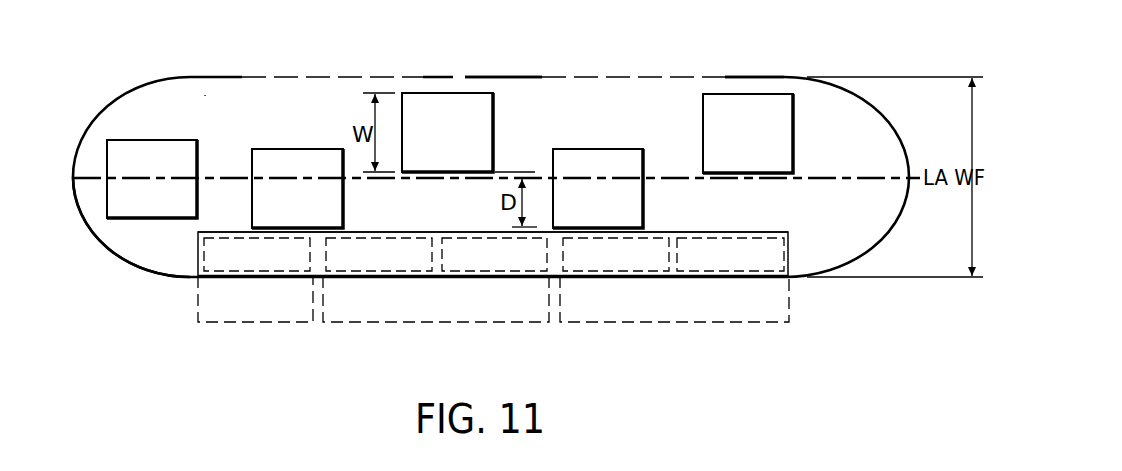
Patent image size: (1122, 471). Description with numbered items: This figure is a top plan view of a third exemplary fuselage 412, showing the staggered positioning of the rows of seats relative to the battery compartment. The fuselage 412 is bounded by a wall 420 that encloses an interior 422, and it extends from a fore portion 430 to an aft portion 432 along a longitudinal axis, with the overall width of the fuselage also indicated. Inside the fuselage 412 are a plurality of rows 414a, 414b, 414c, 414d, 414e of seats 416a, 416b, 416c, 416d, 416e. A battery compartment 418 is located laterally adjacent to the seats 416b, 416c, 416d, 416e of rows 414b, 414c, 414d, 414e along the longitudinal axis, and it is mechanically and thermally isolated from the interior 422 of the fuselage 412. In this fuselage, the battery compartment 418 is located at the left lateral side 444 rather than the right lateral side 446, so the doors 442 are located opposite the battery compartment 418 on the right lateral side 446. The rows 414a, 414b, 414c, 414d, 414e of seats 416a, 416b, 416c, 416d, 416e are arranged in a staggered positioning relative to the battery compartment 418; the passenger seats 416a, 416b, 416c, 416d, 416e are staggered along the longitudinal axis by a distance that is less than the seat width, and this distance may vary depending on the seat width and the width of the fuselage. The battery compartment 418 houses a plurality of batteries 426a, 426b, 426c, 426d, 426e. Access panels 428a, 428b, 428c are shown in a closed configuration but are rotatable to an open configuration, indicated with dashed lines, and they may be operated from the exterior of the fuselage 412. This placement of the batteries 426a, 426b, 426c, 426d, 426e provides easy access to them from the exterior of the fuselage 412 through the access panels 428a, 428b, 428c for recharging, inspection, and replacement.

The fuselage 412 is at (153, 77).
The interior 422 is at (205, 95).
The doors 442 is at (260, 76).
The right lateral side 446 is at (508, 76).
The wall 420 is at (760, 77).
The fore portion 430 is at (168, 277).
The aft portion 432 is at (893, 133).
The seat 416a is at (128, 212).
The seat 416b is at (297, 149).
The seat 416c is at (410, 93).
The seat 416d is at (598, 148).
The seat 416e is at (793, 130).
The row 414a is at (120, 125).
The row 414b is at (328, 133).
The row 414c is at (458, 78).
The row 414d is at (558, 137).
The row 414e is at (758, 187).
The battery compartment 418 is at (551, 250).
The left lateral side 444 is at (403, 278).
The battery 426a is at (238, 271).
The battery 426b is at (360, 271).
The battery 426c is at (483, 271).
The battery 426d is at (622, 271).
The battery 426e is at (737, 271).
The access panel 428a is at (287, 322).
The access panel 428b is at (496, 322).
The access panel 428c is at (685, 322).